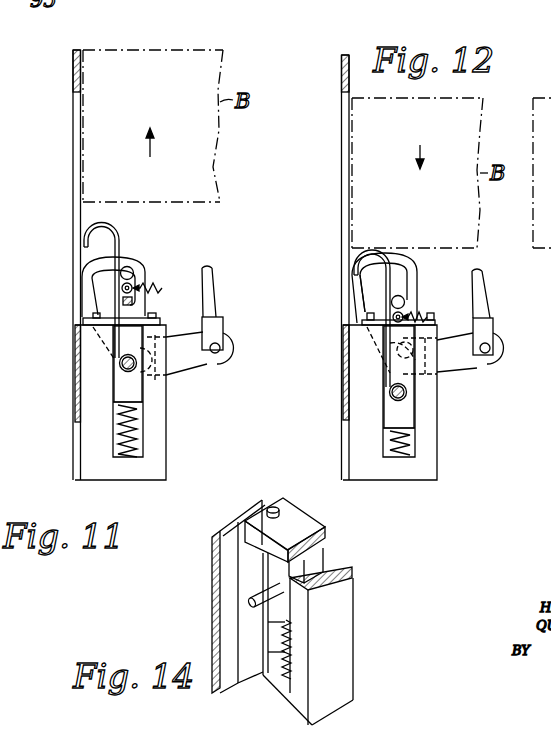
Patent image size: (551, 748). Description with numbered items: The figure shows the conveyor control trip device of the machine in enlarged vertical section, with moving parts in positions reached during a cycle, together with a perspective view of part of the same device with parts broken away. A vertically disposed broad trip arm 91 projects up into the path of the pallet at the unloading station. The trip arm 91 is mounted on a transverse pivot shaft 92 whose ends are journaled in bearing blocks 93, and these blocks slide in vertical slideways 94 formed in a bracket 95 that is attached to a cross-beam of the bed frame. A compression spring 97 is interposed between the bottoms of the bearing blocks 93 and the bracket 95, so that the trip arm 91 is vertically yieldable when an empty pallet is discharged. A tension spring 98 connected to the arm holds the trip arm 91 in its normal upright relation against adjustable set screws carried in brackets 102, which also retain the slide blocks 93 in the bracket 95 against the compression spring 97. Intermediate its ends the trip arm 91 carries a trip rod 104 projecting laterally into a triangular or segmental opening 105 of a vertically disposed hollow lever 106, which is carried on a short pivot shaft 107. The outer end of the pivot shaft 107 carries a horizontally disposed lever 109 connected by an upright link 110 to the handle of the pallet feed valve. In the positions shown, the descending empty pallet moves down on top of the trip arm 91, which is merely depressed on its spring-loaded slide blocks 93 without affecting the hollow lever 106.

In FIG. 11, the trip arm 91 is at (101, 223).
In FIG. 12, the trip arm 91 is at (373, 249).
In FIG. 11, the pivot shaft 92 is at (120, 363).
In FIG. 12, the pivot shaft 92 is at (390, 395).
In FIG. 14, the pivot shaft 92 is at (249, 600).
In FIG. 11, the bearing blocks 93 is at (137, 392).
In FIG. 12, the bearing blocks 93 is at (395, 413).
In FIG. 14, the bearing blocks 93 is at (317, 557).
In FIG. 14, the vertical slideways 94 is at (322, 570).
In FIG. 11, the bracket 95 is at (158, 465).
In FIG. 12, the bracket 95 is at (390, 396).
In FIG. 14, the bracket 95 is at (340, 648).
In FIG. 12, the compression spring 97 is at (407, 440).
In FIG. 14, the compression spring 97 is at (280, 677).
In FIG. 12, the tension spring 98 is at (423, 318).
In FIG. 14, the brackets 102 is at (308, 522).
In FIG. 11, the trip rod 104 is at (130, 268).
In FIG. 12, the trip rod 104 is at (401, 299).
In FIG. 12, the segmental opening 105 is at (372, 283).
In FIG. 11, the hollow lever 106 is at (87, 275).
In FIG. 12, the hollow lever 106 is at (405, 260).
In FIG. 12, the pivot shaft 107 is at (405, 362).
In FIG. 11, the lever 109 is at (212, 366).
In FIG. 12, the lever 109 is at (473, 367).
In FIG. 11, the link 110 is at (213, 296).
In FIG. 12, the link 110 is at (481, 293).